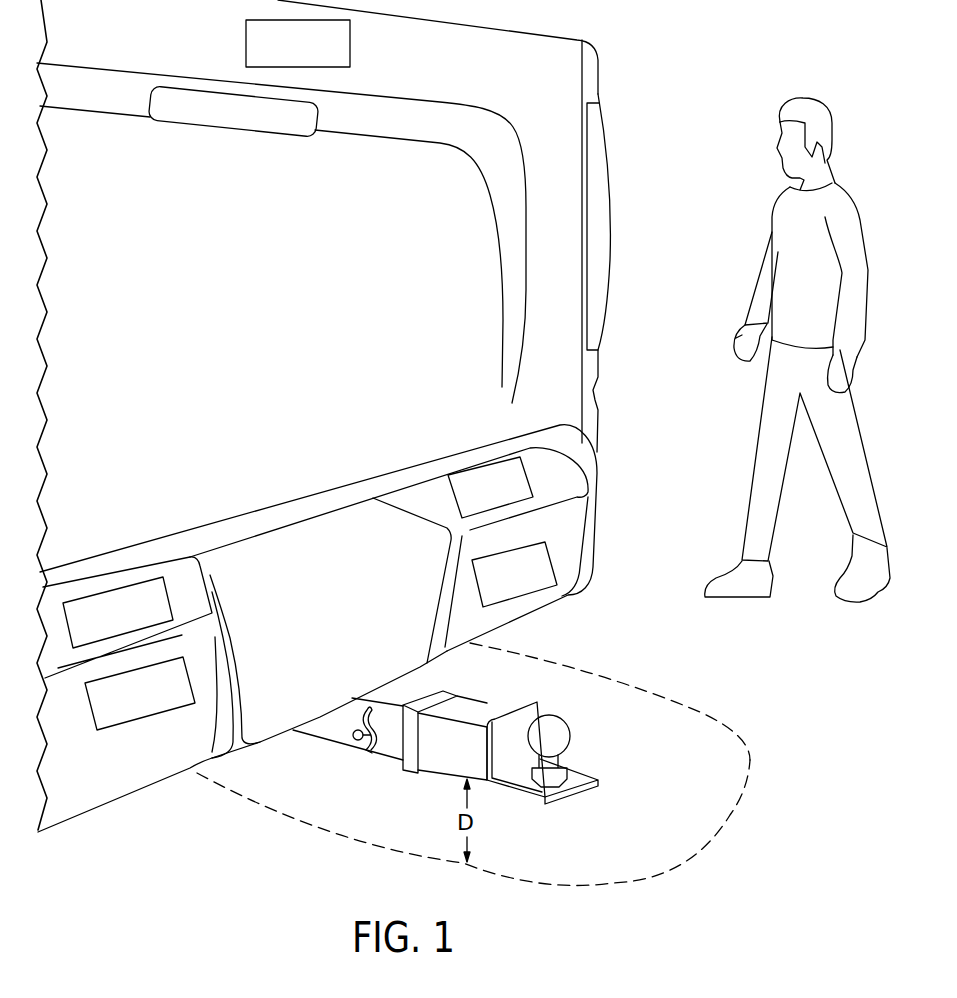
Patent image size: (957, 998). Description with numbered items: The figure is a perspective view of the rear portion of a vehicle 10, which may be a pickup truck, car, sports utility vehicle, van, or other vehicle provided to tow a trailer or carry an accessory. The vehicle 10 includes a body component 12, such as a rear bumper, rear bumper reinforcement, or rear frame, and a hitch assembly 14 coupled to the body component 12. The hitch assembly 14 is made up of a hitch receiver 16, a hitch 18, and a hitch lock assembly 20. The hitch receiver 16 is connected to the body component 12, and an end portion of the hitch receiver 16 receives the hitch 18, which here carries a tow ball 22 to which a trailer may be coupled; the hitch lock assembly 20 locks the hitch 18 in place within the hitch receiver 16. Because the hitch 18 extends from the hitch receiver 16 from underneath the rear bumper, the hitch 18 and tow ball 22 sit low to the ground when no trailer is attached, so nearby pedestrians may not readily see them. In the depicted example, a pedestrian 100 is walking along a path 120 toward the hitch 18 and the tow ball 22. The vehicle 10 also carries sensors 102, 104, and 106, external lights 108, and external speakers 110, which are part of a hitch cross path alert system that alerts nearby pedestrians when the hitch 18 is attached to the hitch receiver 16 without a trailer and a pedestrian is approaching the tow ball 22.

The vehicle 10 is at (366, 415).
The body component 12 is at (138, 775).
The hitch assembly 14 is at (455, 773).
The hitch receiver 16 is at (313, 732).
The hitch 18 is at (470, 710).
The hitch lock assembly 20 is at (353, 736).
The tow ball 22 is at (563, 737).
The pedestrian 100 is at (768, 232).
The sensor 102 is at (139, 626).
The sensor 104 is at (513, 501).
The sensor 106 is at (160, 706).
The external lights 108 is at (536, 586).
The external speakers 110 is at (318, 56).
The path 120 is at (694, 648).